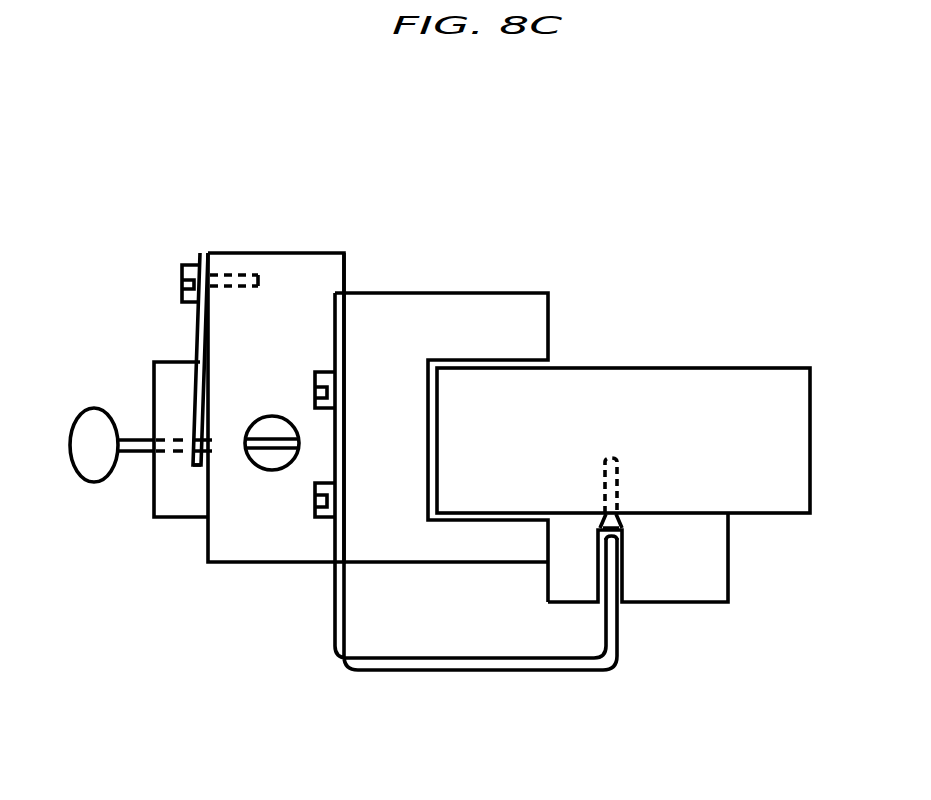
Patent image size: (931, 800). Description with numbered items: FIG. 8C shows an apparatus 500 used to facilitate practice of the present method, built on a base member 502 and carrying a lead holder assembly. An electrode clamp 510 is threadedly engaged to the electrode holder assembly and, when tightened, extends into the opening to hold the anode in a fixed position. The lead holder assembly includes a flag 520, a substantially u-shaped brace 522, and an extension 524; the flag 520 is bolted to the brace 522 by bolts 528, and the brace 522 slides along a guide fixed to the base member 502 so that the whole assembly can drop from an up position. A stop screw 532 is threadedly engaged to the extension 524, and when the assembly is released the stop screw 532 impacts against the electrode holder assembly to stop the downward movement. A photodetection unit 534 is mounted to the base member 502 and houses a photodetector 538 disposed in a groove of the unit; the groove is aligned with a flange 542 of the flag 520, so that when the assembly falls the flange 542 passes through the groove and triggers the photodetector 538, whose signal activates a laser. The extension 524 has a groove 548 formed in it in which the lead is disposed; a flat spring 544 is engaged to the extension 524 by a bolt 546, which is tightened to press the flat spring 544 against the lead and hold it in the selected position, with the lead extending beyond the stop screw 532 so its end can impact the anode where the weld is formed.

The apparatus 500 is at (728, 204).
The base member 502 is at (716, 360).
The electrode clamp 510 is at (110, 408).
The flag 520 is at (453, 673).
The brace 522 is at (470, 293).
The extension 524 is at (278, 252).
The bolts 528 is at (317, 380).
The stop screw 532 is at (277, 478).
The photodetection unit 534 is at (728, 543).
The photodetector 538 is at (618, 492).
The flange 542 is at (618, 626).
The flat spring 544 is at (197, 382).
The bolt 546 is at (192, 264).
The groove 548 is at (208, 447).